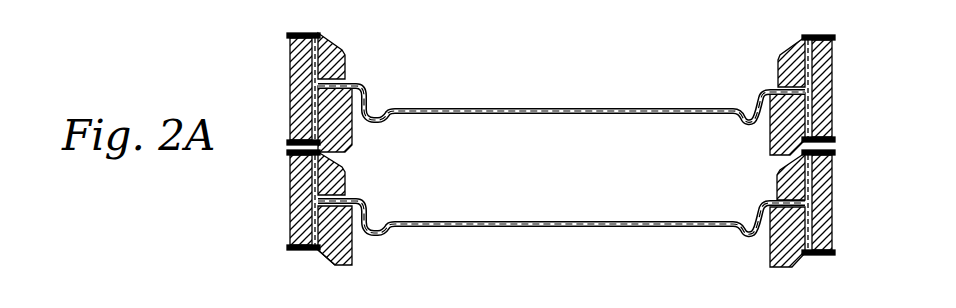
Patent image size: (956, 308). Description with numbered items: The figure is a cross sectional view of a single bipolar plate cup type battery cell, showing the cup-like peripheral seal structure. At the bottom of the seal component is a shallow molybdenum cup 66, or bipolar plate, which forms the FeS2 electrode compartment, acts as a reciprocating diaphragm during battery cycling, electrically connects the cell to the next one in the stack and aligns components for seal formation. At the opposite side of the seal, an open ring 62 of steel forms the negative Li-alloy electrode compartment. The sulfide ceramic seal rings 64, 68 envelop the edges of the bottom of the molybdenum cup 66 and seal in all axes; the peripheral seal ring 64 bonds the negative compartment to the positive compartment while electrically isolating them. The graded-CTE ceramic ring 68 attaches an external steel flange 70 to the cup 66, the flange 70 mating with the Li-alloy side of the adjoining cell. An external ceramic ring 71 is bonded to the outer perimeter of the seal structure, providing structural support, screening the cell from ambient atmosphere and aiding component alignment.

The open ring 62 is at (323, 35).
The peripheral seal ring 64 is at (342, 68).
The molybdenum cup 66 is at (523, 220).
The sulfide ceramic seal ring 68 is at (323, 257).
The external steel flange 70 is at (353, 243).
The external ceramic ring 71 is at (828, 93).